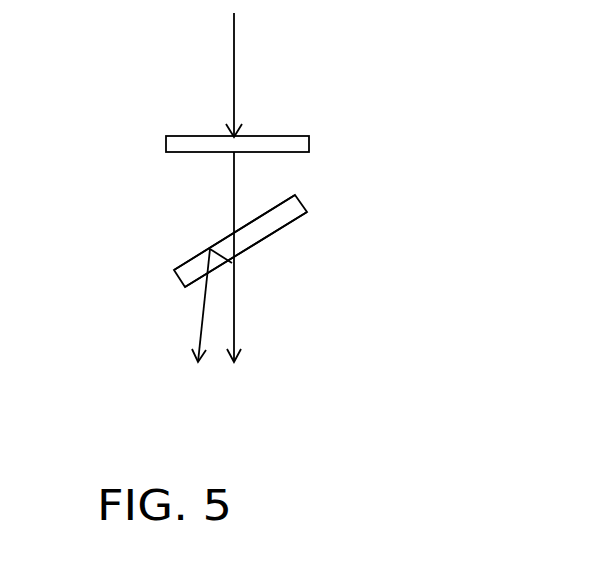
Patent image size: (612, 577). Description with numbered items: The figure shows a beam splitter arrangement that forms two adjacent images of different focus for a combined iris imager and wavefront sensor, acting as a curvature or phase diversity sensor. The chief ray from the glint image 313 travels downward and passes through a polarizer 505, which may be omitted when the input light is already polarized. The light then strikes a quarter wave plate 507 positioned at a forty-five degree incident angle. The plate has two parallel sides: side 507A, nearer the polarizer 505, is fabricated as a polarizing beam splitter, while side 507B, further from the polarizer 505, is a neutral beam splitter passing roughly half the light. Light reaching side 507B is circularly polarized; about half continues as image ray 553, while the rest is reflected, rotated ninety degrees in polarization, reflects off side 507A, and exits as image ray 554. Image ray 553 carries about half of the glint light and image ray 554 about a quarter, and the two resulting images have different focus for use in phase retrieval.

The glint image 313 is at (238, 70).
The polarizer 505 is at (312, 142).
The quarter wave plate 507 is at (310, 205).
The side of the quarter wave plate 507A is at (277, 201).
The side of the quarter wave plate 507B is at (284, 228).
The image ray 553 is at (238, 326).
The image ray 554 is at (200, 324).